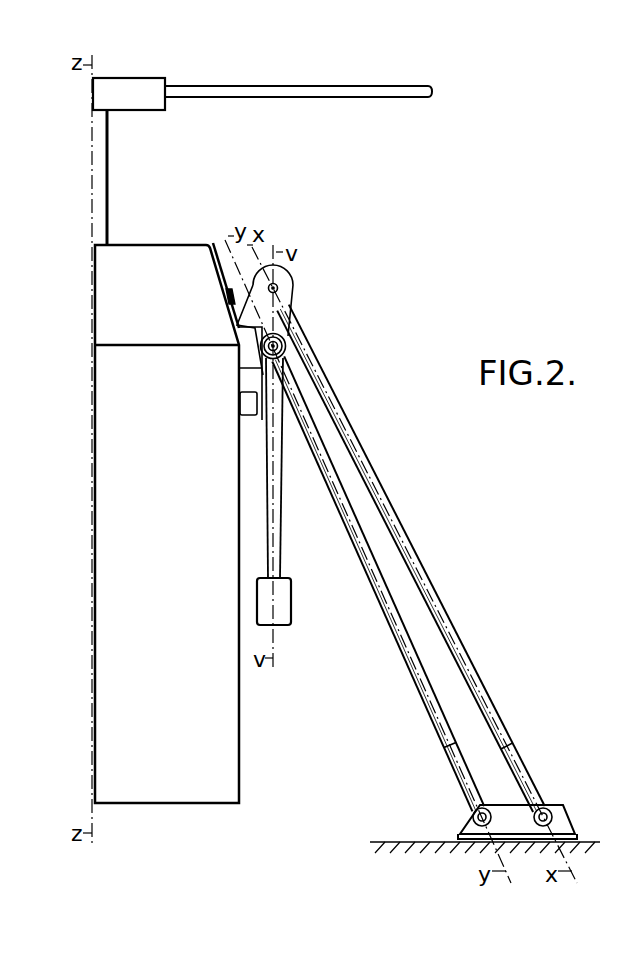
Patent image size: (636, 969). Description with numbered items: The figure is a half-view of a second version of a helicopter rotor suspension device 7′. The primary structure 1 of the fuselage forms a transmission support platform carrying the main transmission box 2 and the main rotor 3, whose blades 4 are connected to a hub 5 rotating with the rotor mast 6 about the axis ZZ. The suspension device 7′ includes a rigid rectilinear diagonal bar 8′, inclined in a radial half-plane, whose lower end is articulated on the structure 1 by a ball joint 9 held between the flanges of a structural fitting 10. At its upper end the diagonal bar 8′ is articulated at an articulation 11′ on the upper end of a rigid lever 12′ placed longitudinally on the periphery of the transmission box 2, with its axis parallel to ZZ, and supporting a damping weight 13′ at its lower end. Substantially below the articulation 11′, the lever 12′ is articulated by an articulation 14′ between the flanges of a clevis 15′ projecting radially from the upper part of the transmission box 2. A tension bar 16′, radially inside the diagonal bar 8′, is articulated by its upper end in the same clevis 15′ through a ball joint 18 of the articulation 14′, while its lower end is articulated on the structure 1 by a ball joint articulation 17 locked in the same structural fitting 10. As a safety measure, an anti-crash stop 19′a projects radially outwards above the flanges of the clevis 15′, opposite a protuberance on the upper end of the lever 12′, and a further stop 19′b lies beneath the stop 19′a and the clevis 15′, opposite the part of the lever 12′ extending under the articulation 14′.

The primary structure 1 is at (392, 840).
The main transmission box 2 is at (158, 775).
The main rotor 3 is at (170, 79).
The blades 4 is at (263, 86).
The hub 5 is at (115, 95).
The rotor mast 6 is at (103, 167).
The suspension device 7′ is at (360, 400).
The diagonal bar 8′ is at (413, 547).
The ball joint 9 is at (556, 808).
The structural fitting 10 is at (563, 827).
The articulation 11′ is at (295, 277).
The lever 12′ is at (283, 545).
The damping weight 13′ is at (281, 605).
The articulation 14′ is at (281, 343).
The clevis 15′ is at (237, 327).
The tension bar 16′ is at (400, 650).
The ball joint articulation 17 is at (470, 815).
The ball joint 18 is at (286, 350).
The anti-crash stop 19′a is at (231, 318).
The stop 19′b is at (250, 402).